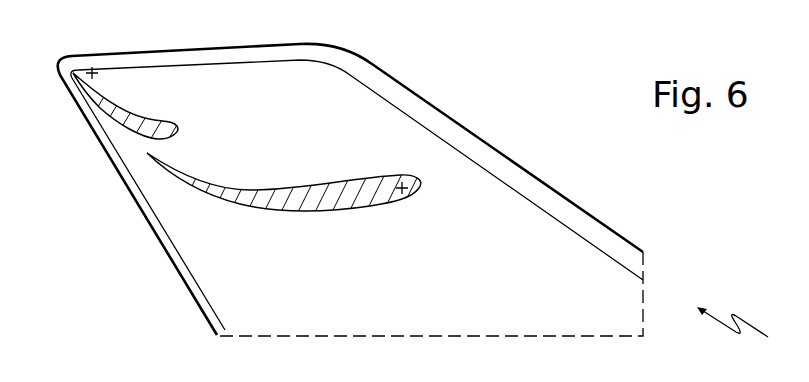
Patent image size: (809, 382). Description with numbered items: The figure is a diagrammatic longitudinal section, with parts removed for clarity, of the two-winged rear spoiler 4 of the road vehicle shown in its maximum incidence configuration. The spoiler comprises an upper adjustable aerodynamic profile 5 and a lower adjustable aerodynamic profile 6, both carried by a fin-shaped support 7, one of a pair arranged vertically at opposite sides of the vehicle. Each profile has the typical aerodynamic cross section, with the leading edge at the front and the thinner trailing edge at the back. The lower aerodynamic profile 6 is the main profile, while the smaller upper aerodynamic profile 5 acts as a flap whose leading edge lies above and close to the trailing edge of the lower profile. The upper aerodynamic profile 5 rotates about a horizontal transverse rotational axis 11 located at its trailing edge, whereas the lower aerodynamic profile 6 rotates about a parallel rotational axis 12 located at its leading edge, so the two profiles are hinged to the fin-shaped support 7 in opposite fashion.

The two-winged rear spoiler 4 is at (739, 330).
The upper adjustable aerodynamic profile 5 is at (155, 123).
The lower adjustable aerodynamic profile 6 is at (317, 205).
The fin-shaped support 7 is at (233, 290).
The rotational axis 11 is at (90, 70).
The rotational axis 12 is at (413, 198).